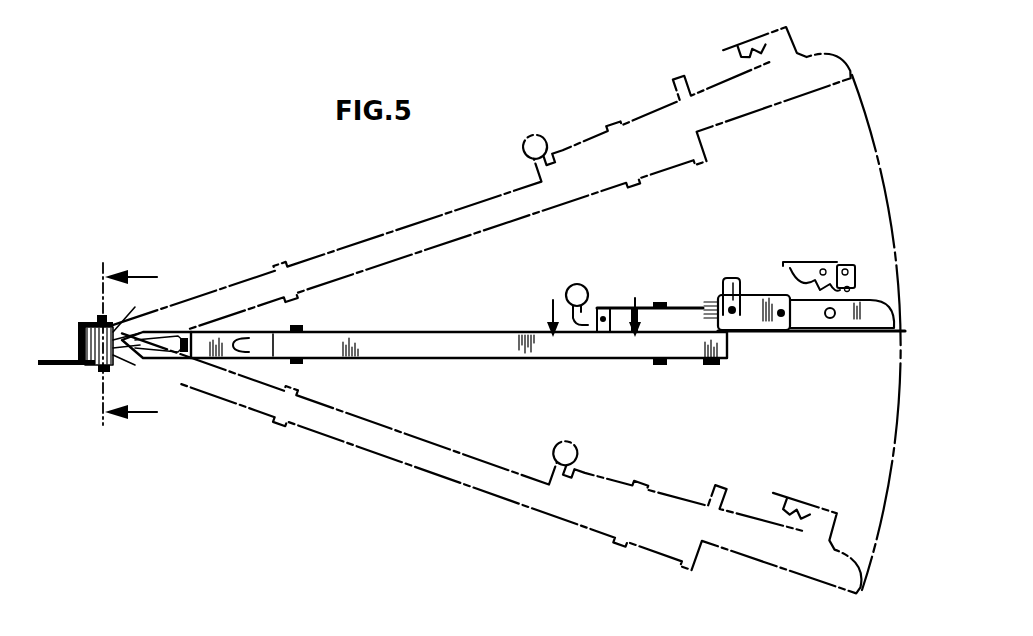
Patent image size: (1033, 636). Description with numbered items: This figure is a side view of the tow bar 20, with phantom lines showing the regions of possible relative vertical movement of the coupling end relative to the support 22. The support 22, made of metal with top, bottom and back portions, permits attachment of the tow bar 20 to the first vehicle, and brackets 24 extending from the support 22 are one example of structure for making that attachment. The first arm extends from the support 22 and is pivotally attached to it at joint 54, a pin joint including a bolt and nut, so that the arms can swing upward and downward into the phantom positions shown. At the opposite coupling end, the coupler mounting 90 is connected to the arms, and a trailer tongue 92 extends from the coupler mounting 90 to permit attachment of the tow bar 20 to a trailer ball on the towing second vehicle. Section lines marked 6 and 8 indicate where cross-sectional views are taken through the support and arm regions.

The tow bar 20 is at (227, 252).
The support 22 is at (78, 338).
The brackets 24 is at (72, 365).
The joint 54 is at (114, 318).
The coupler mounting 90 is at (684, 298).
The trailer tongue 92 is at (829, 333).
The section line 6- 6 is at (130, 345).
The section line 8- 8 is at (622, 304).